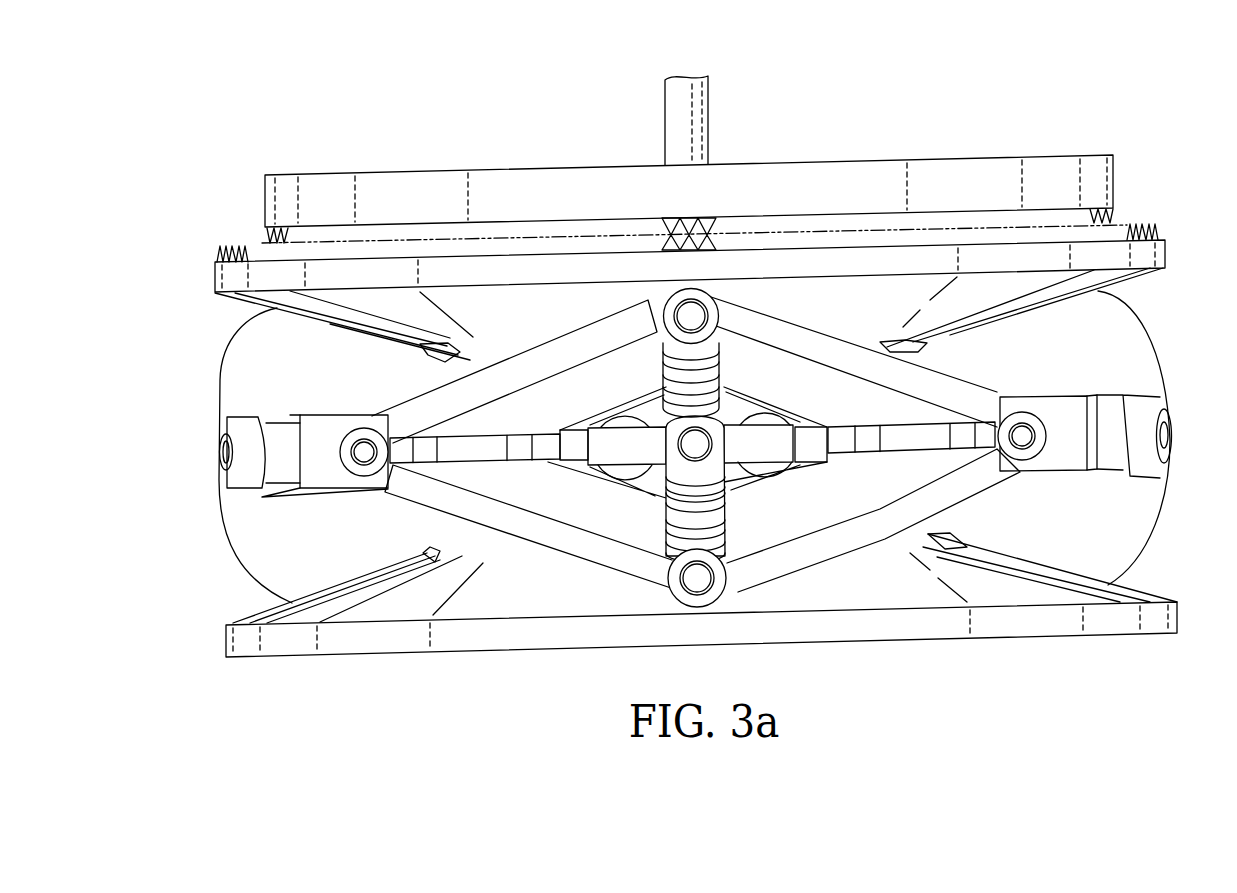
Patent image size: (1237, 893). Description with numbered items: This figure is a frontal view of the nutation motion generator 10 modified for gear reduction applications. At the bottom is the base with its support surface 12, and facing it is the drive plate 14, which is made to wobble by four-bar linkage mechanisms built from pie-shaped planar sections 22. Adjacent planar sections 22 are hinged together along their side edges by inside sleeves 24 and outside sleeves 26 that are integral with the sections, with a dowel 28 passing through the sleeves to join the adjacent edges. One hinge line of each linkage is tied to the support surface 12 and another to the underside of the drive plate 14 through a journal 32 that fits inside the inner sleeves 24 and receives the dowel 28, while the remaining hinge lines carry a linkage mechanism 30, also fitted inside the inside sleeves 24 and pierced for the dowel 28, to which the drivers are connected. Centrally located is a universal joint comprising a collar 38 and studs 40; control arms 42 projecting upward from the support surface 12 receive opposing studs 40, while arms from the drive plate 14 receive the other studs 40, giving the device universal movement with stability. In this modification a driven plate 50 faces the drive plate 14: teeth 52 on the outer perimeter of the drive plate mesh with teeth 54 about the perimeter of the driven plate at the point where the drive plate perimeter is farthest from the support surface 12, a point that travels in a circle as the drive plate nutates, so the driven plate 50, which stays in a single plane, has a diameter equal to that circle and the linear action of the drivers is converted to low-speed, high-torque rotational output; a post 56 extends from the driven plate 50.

The nutation motion generator 10 is at (222, 578).
The support surface 12 is at (911, 597).
The drive plate 14 is at (1143, 256).
The planar sections 22 is at (339, 366).
The inside sleeves 24 is at (278, 437).
The outside sleeves 26 is at (247, 470).
The dowel 28 is at (700, 312).
The linkage mechanism 30 is at (335, 461).
The journal 32 is at (712, 372).
The collar 38 is at (773, 458).
The studs 40 is at (564, 461).
The control arms 42 is at (717, 478).
The driven plate 50 is at (343, 190).
The teeth 52 is at (220, 247).
The teeth 54 is at (268, 238).
The post 56 is at (678, 107).